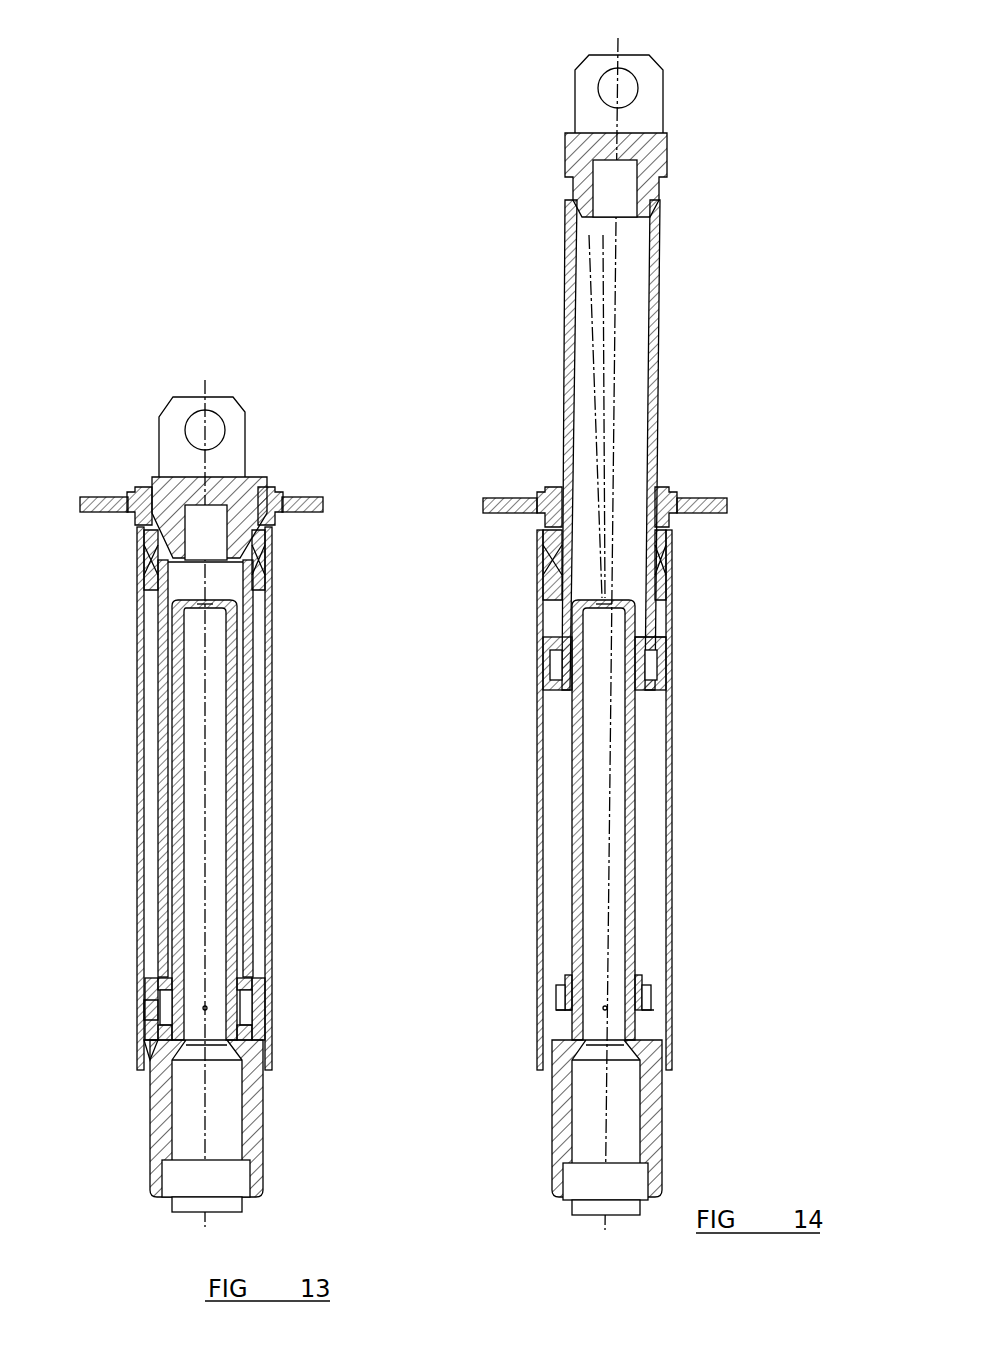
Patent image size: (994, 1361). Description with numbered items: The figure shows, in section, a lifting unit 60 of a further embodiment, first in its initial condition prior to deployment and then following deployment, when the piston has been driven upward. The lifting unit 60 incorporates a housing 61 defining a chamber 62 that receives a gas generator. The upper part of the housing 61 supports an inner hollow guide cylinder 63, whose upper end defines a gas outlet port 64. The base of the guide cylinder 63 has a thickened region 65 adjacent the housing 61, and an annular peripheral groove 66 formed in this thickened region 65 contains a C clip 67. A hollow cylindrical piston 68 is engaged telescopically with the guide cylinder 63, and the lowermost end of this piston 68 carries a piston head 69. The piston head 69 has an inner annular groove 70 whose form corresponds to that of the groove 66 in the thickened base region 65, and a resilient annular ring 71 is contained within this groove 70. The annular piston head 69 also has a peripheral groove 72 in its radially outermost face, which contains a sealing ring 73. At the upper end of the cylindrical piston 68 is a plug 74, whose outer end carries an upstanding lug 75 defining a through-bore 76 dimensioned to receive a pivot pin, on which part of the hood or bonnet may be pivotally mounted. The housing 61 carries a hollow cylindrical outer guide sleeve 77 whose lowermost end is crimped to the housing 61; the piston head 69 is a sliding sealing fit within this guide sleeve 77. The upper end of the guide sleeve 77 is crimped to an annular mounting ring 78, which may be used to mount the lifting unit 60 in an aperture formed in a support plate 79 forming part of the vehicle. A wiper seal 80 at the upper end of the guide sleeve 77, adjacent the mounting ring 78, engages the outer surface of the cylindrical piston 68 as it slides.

In FIG. 13, the lifting unit 60 is at (136, 833).
In FIG. 14, the lifting unit 60 is at (770, 824).
In FIG. 13, the housing 61 is at (265, 1130).
In FIG. 14, the housing 61 is at (652, 1137).
In FIG. 13, the chamber 62 is at (222, 1175).
In FIG. 14, the chamber 62 is at (628, 1192).
In FIG. 13, the inner hollow guide cylinder 63 is at (232, 812).
In FIG. 14, the inner hollow guide cylinder 63 is at (636, 820).
In FIG. 13, the gas outlet port 64 is at (208, 600).
In FIG. 14, the gas outlet port 64 is at (605, 598).
In FIG. 13, the thickened region 65 is at (243, 978).
In FIG. 14, the thickened region 65 is at (642, 972).
In FIG. 13, the annular peripheral groove 66 is at (265, 985).
In FIG. 14, the annular peripheral groove 66 is at (644, 982).
In FIG. 14, the C clip 67 is at (670, 1003).
In FIG. 13, the hollow cylindrical piston 68 is at (248, 703).
In FIG. 14, the hollow cylindrical piston 68 is at (660, 355).
In FIG. 13, the piston head 69 is at (252, 985).
In FIG. 14, the piston head 69 is at (663, 643).
In FIG. 13, the inner annular groove 70 is at (258, 1027).
In FIG. 14, the inner annular groove 70 is at (665, 722).
In FIG. 14, the resilient annular ring 71 is at (558, 665).
In FIG. 13, the peripheral groove 72 is at (147, 1040).
In FIG. 13, the sealing ring 73 is at (148, 1013).
In FIG. 13, the plug 74 is at (245, 472).
In FIG. 14, the plug 74 is at (670, 152).
In FIG. 13, the upstanding lug 75 is at (233, 412).
In FIG. 14, the upstanding lug 75 is at (657, 68).
In FIG. 13, the through-bore 76 is at (216, 422).
In FIG. 14, the through-bore 76 is at (636, 95).
In FIG. 13, the hollow cylindrical outer guide sleeve 77 is at (140, 700).
In FIG. 14, the hollow cylindrical outer guide sleeve 77 is at (673, 862).
In FIG. 13, the annular mounting ring 78 is at (141, 487).
In FIG. 14, the annular mounting ring 78 is at (655, 488).
In FIG. 13, the support plate 79 is at (92, 513).
In FIG. 14, the support plate 79 is at (703, 497).
In FIG. 13, the wiper seal 80 is at (138, 593).
In FIG. 14, the wiper seal 80 is at (548, 573).